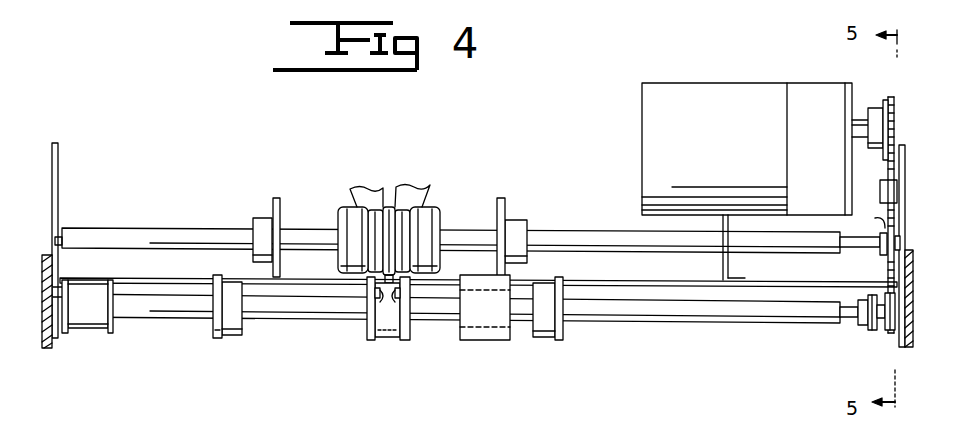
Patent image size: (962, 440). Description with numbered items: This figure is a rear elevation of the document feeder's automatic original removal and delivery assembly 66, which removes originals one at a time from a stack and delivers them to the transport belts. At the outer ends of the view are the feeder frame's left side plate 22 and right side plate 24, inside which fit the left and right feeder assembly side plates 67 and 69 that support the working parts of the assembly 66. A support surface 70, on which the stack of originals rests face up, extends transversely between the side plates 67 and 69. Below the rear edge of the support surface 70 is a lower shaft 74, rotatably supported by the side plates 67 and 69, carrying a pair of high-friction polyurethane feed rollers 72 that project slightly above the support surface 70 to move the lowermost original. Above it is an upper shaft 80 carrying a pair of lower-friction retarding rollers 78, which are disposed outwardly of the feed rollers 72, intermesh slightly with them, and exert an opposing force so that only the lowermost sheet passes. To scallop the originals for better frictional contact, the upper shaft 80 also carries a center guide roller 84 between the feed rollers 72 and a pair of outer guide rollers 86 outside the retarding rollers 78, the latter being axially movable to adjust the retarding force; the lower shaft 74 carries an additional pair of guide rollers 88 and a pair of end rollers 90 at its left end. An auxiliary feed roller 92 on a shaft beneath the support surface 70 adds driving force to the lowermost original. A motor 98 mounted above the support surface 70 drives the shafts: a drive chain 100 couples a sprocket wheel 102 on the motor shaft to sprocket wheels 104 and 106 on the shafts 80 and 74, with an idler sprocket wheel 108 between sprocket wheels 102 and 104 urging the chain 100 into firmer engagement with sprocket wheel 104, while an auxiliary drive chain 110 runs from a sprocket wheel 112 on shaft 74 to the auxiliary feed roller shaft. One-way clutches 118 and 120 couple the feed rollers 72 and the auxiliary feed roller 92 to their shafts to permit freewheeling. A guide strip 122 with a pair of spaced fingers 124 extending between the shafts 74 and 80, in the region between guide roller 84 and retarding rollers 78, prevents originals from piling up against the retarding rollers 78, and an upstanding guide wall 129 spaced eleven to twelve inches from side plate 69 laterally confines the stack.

The left side plate 22 is at (912, 258).
The right side plate 24 is at (43, 257).
The automatic original removal and delivery assembly 66 is at (458, 158).
The left feeder assembly side plate 67 is at (908, 157).
The right feeder assembly side plate 69 is at (57, 183).
The support surface 70 is at (168, 275).
The feed rollers 72 is at (370, 340).
The shaft 74 is at (600, 320).
The retarding rollers 78 is at (353, 218).
The upper shaft 80 is at (557, 230).
The center guide roller 84 is at (389, 207).
The outer guide rollers 86 is at (275, 198).
The guide rollers 88 is at (218, 340).
The end rollers 90 is at (103, 335).
The auxiliary feed roller 92 is at (477, 340).
The motor 98 is at (730, 83).
The drive chain 100 is at (898, 123).
The sprocket wheel 102 is at (883, 110).
The sprocket wheel 104 is at (885, 218).
The sprocket wheel 106 is at (890, 335).
The idler sprocket wheel 108 is at (898, 177).
The auxiliary drive chain 110 is at (873, 290).
The sprocket wheel 112 is at (862, 322).
The one-way clutch 118 is at (385, 337).
The one-way clutch 120 is at (497, 330).
The guide strip 122 is at (350, 185).
The spaced fingers 124 is at (368, 303).
The upstanding guide wall 129 is at (720, 265).